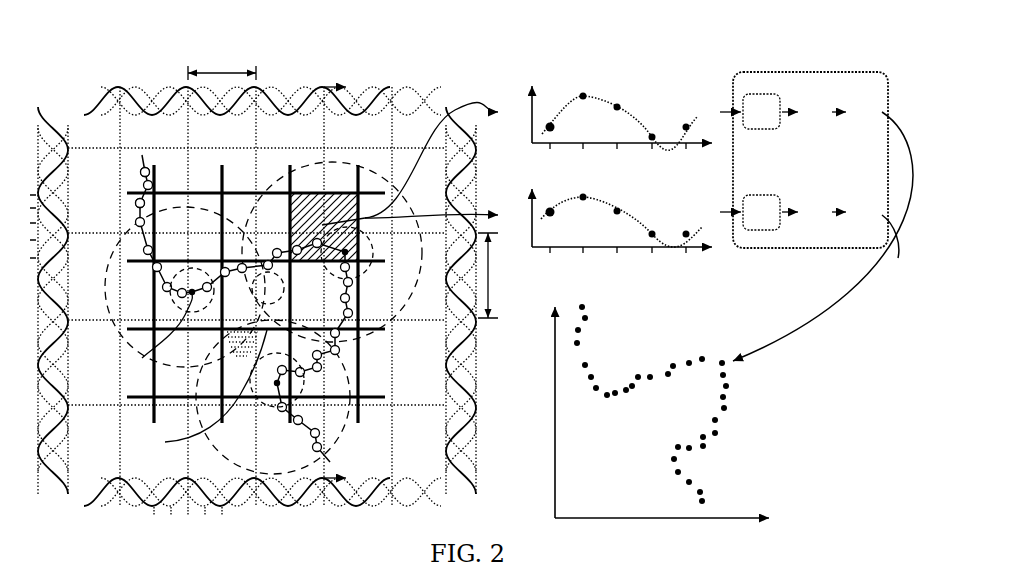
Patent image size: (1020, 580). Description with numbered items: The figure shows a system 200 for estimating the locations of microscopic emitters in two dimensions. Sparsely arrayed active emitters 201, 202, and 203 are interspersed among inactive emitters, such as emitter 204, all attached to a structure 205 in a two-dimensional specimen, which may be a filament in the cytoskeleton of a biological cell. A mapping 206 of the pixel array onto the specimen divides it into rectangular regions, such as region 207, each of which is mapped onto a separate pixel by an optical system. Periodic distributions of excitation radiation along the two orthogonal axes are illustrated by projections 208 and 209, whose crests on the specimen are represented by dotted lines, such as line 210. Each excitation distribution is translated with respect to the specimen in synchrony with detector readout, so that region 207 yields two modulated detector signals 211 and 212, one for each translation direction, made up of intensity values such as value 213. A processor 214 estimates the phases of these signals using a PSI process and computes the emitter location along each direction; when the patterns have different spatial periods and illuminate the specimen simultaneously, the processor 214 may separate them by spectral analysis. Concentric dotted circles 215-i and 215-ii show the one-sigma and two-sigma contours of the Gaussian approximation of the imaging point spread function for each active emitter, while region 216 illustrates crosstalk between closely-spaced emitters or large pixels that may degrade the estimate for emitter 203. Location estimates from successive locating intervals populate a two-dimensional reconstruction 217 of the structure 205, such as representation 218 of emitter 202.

The system 200 is at (465, 285).
The active emitter 201 is at (186, 300).
The active emitter 202 is at (362, 258).
The active emitter 203 is at (238, 348).
The inactive emitter 204 is at (136, 207).
The structure 205 is at (142, 158).
The mapping of the pixel array 206 is at (373, 430).
The region 207 is at (318, 207).
The projection 208 is at (124, 88).
The projection 209 is at (51, 119).
The line 210 is at (408, 406).
The detector signal 211 is at (644, 105).
The detector signal 212 is at (644, 205).
The intensity value 213 is at (551, 122).
The processor 214 is at (808, 72).
The circle 215-i is at (133, 358).
The circle 215-ii is at (168, 375).
The region 216 is at (198, 392).
The two-dimensional reconstruction 217 is at (683, 334).
The representation 218 is at (719, 366).